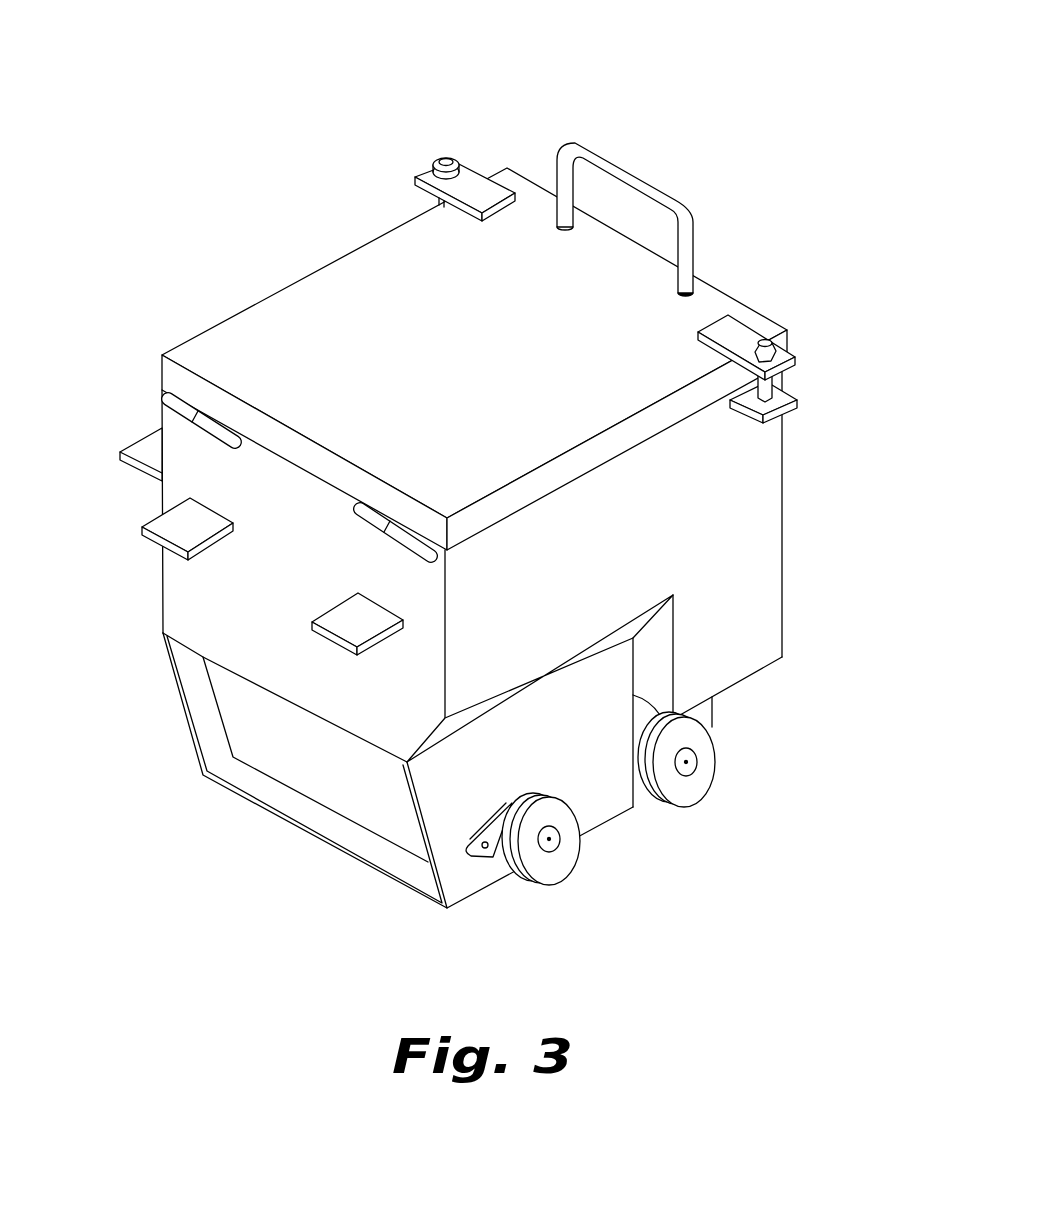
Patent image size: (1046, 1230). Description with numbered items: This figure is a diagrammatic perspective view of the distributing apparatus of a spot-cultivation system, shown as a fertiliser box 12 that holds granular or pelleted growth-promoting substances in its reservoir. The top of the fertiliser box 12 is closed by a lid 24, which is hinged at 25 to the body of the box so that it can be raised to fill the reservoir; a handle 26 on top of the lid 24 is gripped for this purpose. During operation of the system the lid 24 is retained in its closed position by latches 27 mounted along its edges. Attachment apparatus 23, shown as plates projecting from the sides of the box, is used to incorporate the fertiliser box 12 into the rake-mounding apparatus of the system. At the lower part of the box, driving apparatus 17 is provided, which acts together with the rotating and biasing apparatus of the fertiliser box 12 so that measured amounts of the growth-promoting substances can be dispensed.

The fertiliser box 12 is at (478, 478).
The driving apparatus 17 is at (550, 868).
The attachment apparatus 23 is at (187, 527).
The lid 24 is at (608, 445).
The hinge 25 is at (162, 395).
The handle 26 is at (658, 199).
The latches 27 is at (797, 360).